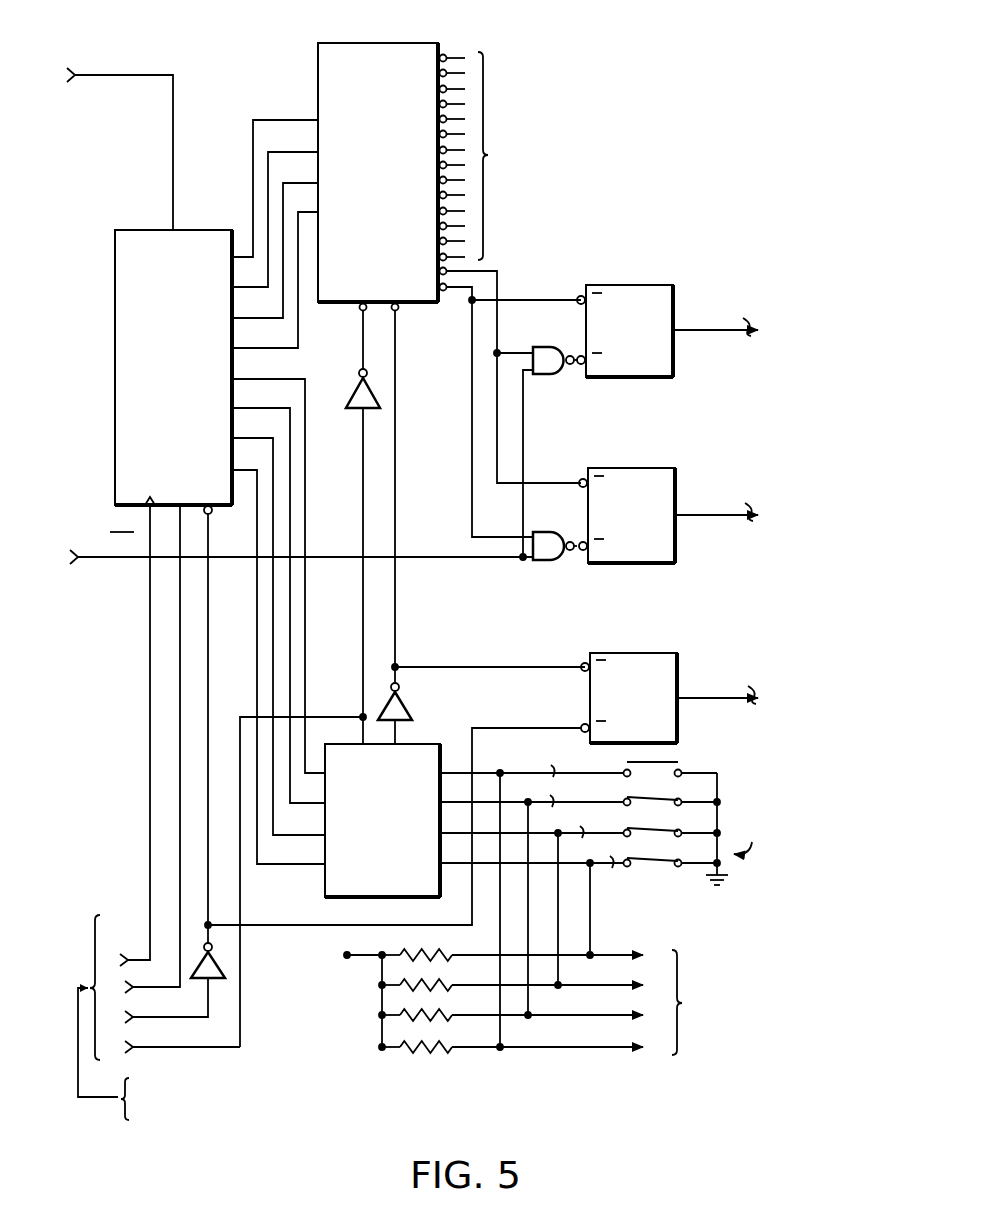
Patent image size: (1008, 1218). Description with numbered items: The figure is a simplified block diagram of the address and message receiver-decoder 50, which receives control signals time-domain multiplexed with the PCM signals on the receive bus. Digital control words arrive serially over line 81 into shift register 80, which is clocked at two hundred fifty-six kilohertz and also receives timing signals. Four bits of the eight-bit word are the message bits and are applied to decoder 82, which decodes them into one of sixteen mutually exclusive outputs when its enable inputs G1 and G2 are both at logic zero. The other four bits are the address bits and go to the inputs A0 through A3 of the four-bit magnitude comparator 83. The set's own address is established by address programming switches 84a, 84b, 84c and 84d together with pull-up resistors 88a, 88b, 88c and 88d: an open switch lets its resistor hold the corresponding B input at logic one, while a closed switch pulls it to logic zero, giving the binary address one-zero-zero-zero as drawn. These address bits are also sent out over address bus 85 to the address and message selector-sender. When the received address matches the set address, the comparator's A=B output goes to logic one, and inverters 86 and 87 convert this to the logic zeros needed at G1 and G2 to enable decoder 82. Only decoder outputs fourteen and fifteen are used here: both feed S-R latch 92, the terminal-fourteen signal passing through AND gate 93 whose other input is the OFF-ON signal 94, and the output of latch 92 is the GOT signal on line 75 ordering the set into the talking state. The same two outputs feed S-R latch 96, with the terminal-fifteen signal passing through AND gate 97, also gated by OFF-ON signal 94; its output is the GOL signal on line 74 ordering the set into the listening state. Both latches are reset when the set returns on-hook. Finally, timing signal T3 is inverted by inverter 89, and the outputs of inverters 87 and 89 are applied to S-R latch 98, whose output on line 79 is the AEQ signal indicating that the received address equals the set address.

The address and message receiver-decoder 50 is at (443, 465).
The shift register 80 is at (115, 273).
The line 81 is at (173, 105).
The decoder 82 is at (318, 66).
The 4-bit magnitude comparator 83 is at (325, 883).
The address programming switch 84a is at (632, 758).
The address programming switch 84b is at (632, 788).
The address programming switch 84c is at (649, 818).
The address programming switch 84d is at (659, 864).
The address bus 85 is at (602, 984).
The inverter 86 is at (357, 380).
The inverter 87 is at (402, 697).
The pull-up resistor 88a is at (433, 1041).
The pull-up resistor 88b is at (433, 1009).
The pull-up resistor 88c is at (433, 979).
The pull-up resistor 88d is at (433, 949).
The inverter 89 is at (222, 962).
The S-R latch 92 is at (628, 285).
The AND gate 93 is at (560, 347).
The OFF-ON signal 94 is at (112, 560).
The S-R latch 96 is at (630, 468).
The AND gate 97 is at (564, 532).
The S-R latch 98 is at (634, 652).
The line 75 is at (712, 333).
The line 74 is at (714, 518).
The line 79 is at (712, 700).